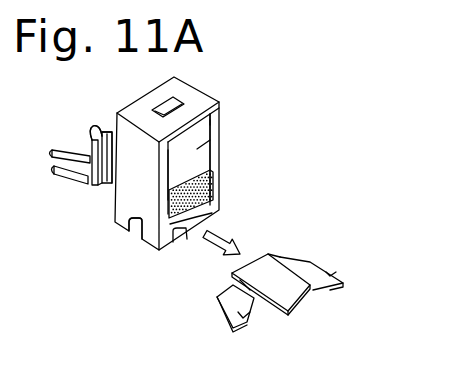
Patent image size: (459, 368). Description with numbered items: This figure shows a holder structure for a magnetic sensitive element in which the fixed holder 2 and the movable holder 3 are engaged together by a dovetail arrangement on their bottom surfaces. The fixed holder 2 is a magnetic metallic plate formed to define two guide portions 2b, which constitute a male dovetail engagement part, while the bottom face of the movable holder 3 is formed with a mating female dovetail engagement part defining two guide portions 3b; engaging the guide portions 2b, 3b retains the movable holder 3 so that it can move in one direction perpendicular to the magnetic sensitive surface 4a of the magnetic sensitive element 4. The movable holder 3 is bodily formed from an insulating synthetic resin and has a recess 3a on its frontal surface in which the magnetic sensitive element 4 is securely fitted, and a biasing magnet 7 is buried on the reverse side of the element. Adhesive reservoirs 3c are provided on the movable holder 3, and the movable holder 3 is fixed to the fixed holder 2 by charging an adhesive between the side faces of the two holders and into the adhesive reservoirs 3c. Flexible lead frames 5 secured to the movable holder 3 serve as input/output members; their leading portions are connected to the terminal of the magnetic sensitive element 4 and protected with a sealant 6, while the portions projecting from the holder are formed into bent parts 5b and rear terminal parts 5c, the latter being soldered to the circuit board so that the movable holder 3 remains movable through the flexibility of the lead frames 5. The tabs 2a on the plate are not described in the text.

The fixed holder 2 is at (336, 297).
The engaging tab 2a is at (328, 268).
The guide portions 2b is at (248, 296).
The movable holder 3 is at (133, 117).
The recess 3a is at (214, 108).
The guide portions 3b is at (197, 216).
The adhesive reservoirs 3c is at (123, 229).
The magnetic sensitive element 4 is at (207, 139).
The magnetic sensitive surface 4a is at (200, 150).
The lead frames 5 is at (85, 189).
The bent parts 5b is at (97, 128).
The rear terminal parts 5c is at (73, 151).
The sealant 6 is at (216, 191).
The biasing magnet 7 is at (167, 101).